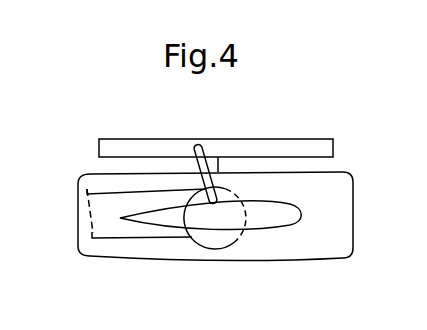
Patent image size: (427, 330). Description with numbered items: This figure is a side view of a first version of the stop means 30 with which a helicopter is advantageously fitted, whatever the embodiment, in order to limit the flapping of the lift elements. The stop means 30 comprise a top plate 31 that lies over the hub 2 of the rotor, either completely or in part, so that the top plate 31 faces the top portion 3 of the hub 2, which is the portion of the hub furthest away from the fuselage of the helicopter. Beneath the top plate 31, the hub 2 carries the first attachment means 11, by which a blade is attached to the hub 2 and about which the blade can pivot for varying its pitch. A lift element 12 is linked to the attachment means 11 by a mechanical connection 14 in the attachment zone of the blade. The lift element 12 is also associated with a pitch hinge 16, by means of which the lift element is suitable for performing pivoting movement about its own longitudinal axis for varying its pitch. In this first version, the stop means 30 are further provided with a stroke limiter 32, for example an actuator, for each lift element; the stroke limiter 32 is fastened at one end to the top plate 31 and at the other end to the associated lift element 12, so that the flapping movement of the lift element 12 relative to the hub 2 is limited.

The stop means 30 is at (80, 141).
The top plate 31 is at (309, 139).
The stroke limiter 32 is at (202, 149).
The first attachment means 11 is at (229, 190).
The first lift element 12 is at (305, 217).
The hub 2 is at (78, 203).
The top portion 3 is at (89, 174).
The first mechanical connection 14 is at (120, 238).
The pitch hinge 16 is at (235, 241).